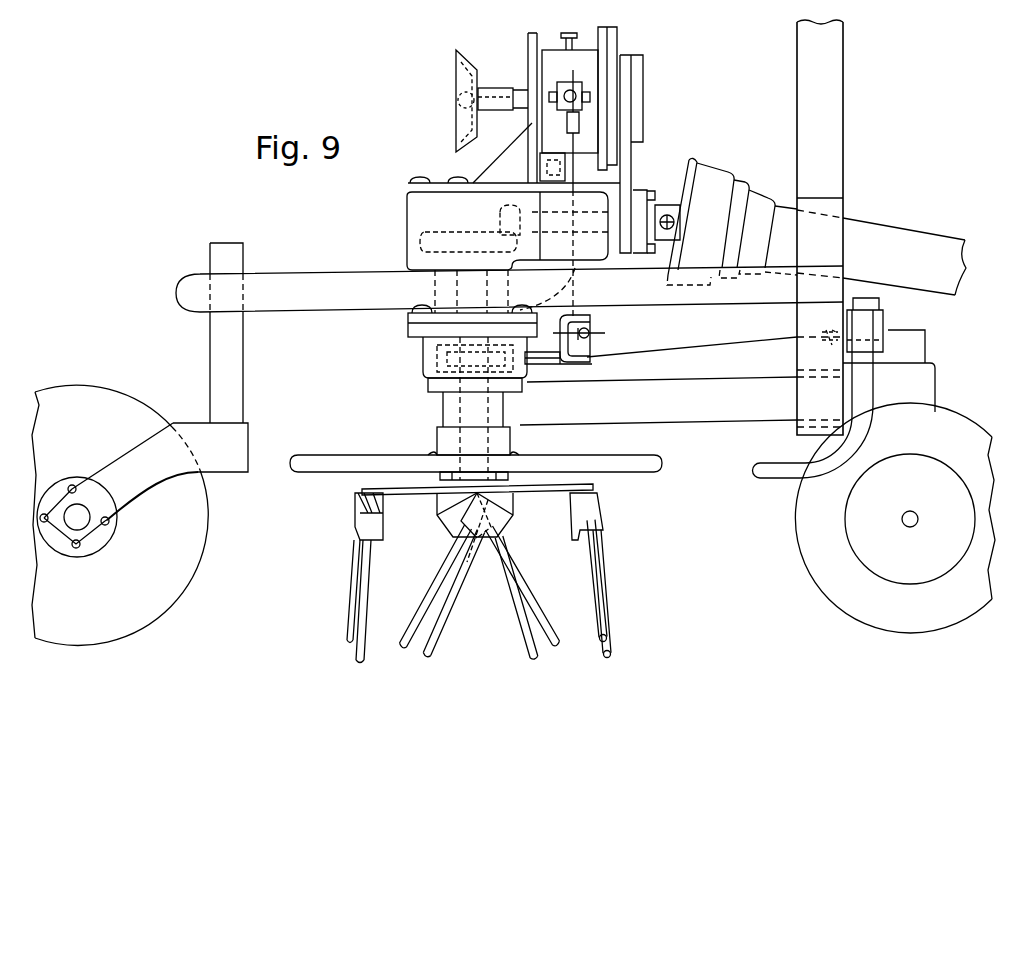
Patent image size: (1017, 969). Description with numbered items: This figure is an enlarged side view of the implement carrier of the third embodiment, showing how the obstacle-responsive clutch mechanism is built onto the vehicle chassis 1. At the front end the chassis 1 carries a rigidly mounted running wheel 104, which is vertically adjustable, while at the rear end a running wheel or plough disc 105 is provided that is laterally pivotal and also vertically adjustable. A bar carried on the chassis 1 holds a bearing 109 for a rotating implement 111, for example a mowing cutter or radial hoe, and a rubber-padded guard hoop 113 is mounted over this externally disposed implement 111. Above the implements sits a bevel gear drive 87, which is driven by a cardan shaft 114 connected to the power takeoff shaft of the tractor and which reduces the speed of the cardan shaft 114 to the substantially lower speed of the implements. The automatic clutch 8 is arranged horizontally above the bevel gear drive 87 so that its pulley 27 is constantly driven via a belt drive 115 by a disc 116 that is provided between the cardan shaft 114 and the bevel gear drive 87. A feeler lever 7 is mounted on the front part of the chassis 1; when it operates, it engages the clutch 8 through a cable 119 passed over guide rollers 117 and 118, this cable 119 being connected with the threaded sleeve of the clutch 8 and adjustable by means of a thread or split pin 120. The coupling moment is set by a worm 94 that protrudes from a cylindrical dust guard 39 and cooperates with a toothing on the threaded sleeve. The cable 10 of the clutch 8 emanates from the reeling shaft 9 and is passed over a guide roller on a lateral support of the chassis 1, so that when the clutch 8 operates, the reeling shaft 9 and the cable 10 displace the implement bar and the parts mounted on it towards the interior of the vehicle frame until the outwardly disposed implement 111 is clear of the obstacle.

The chassis 1 is at (315, 290).
The feeler lever 7 is at (772, 477).
The automatic clutch 8 is at (577, 36).
The reeling shaft 9 is at (510, 108).
The cable 10 is at (496, 88).
The pulley 27 is at (634, 68).
The cylindrical dust guard 39 is at (553, 62).
The bevel gear drive 87 is at (520, 230).
The worm 94 is at (563, 32).
The running wheel 104 is at (812, 550).
The plough disc 105 is at (202, 520).
The bearing 109 is at (448, 409).
The rotating implement 111 is at (534, 487).
The guard hoop 113 is at (357, 462).
The cardan shaft 114 is at (895, 238).
The belt drive 115 is at (627, 158).
The disc 116 is at (640, 200).
The guide roller 117 is at (578, 367).
The guide roller 118 is at (592, 328).
The cable 119 is at (688, 353).
The split pin 120 is at (587, 107).